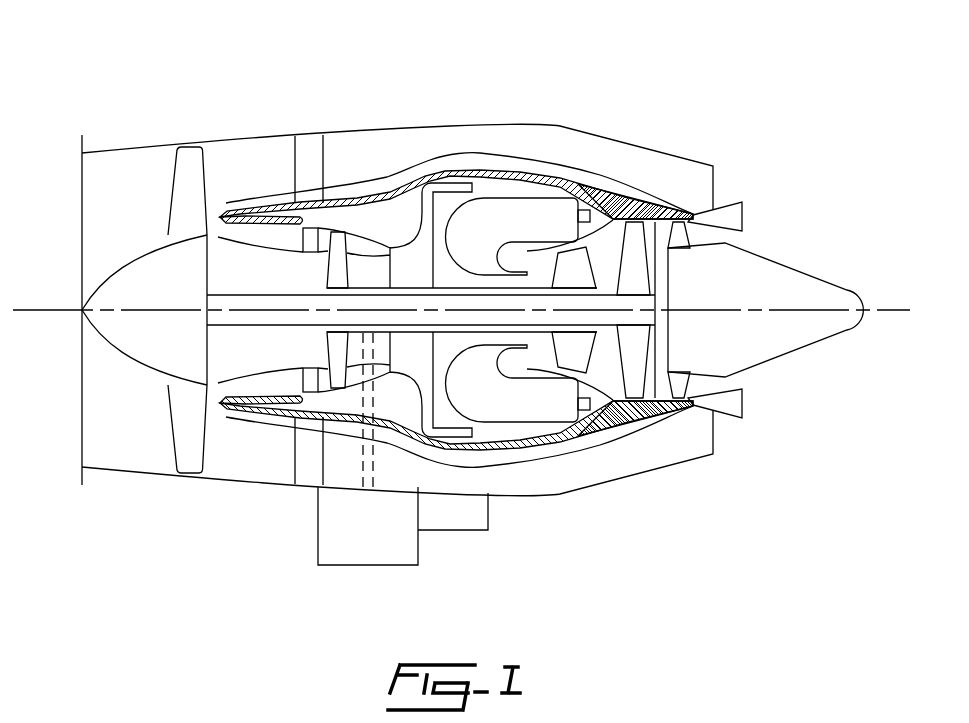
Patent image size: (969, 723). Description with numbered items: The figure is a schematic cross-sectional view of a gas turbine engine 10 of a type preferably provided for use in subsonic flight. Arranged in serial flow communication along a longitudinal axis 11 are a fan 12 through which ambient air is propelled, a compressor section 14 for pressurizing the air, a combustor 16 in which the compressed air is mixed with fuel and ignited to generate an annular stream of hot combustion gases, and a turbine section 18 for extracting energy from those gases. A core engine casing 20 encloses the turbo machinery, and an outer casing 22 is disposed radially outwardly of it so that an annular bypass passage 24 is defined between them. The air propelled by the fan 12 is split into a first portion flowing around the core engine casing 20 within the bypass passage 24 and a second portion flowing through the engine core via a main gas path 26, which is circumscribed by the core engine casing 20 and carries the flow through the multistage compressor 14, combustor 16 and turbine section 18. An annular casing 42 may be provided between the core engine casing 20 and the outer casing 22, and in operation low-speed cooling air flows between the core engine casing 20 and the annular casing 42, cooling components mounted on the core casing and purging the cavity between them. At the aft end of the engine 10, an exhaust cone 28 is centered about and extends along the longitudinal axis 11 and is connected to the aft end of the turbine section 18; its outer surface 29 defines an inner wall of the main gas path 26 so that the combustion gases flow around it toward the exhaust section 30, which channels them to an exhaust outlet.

The gas turbine engine 10 is at (588, 120).
The longitudinal axis 11 is at (40, 307).
The fan 12 is at (185, 417).
The compressor section 14 is at (362, 240).
The combustor 16 is at (513, 212).
The turbine section 18 is at (617, 415).
The core engine casing 20 is at (507, 455).
The outer casing 22 is at (548, 493).
The annular bypass passage 24 is at (417, 150).
The main gas path 26 is at (263, 239).
The exhaust cone 28 is at (790, 362).
The outer surface 29 is at (771, 247).
The exhaust section 30 is at (736, 180).
The annular casing 42 is at (625, 175).